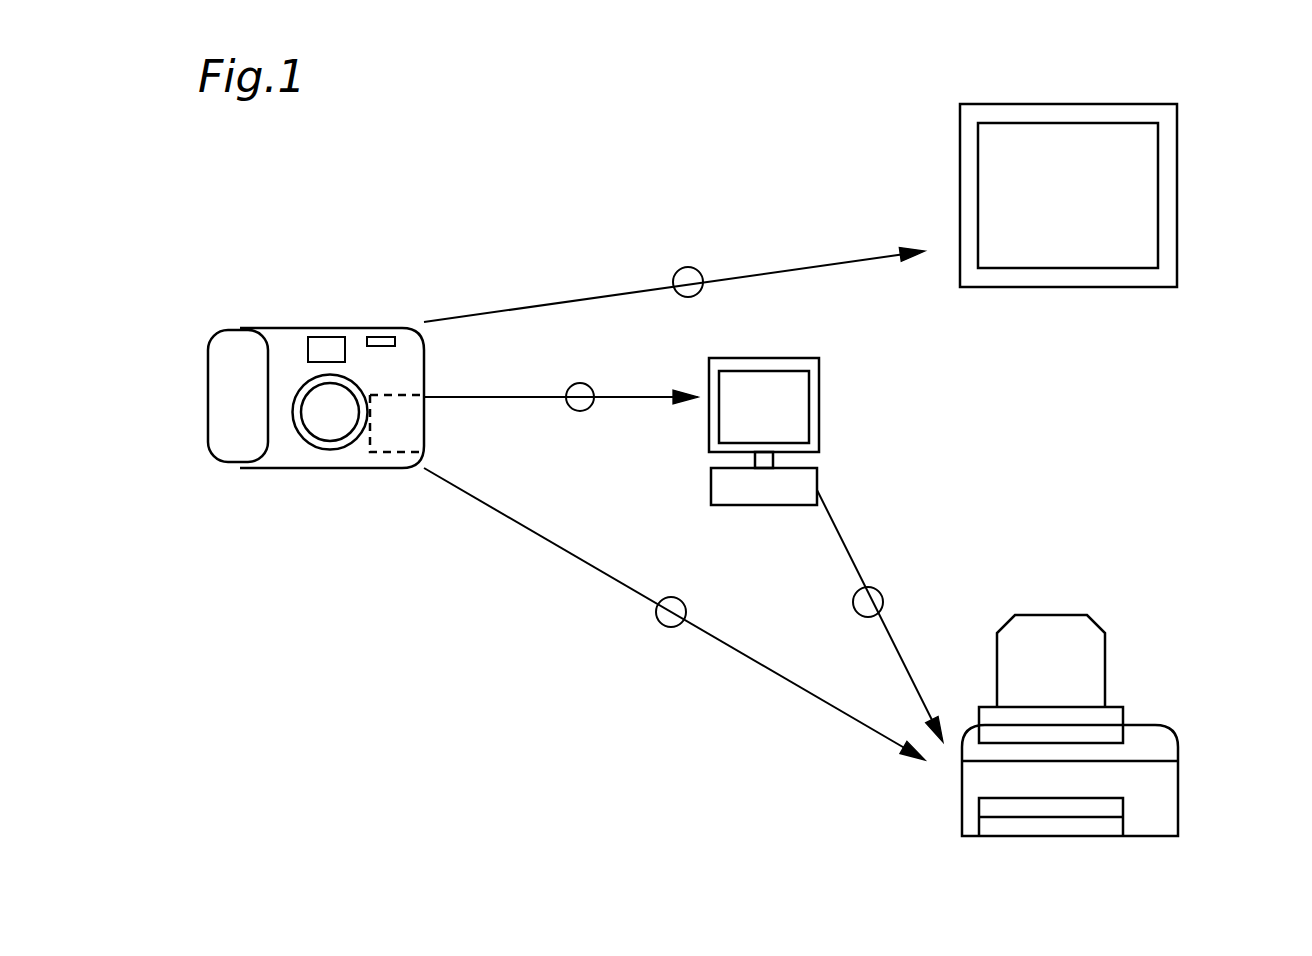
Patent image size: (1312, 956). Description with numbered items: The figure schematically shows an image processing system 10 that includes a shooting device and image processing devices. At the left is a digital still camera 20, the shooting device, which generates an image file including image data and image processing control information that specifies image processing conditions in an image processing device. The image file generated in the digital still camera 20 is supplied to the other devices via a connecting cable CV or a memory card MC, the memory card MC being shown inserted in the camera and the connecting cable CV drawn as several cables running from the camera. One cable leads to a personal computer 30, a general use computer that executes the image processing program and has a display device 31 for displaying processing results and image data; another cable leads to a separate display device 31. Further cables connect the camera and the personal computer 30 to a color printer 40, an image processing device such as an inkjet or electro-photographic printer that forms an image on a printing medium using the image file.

The image processing system 10 is at (708, 155).
The digital still camera 20 is at (297, 323).
The memory card MC is at (407, 420).
The connecting cable CV is at (688, 267).
The display device 31 is at (1177, 203).
The personal computer 30 is at (837, 476).
The color printer 40 is at (1140, 722).